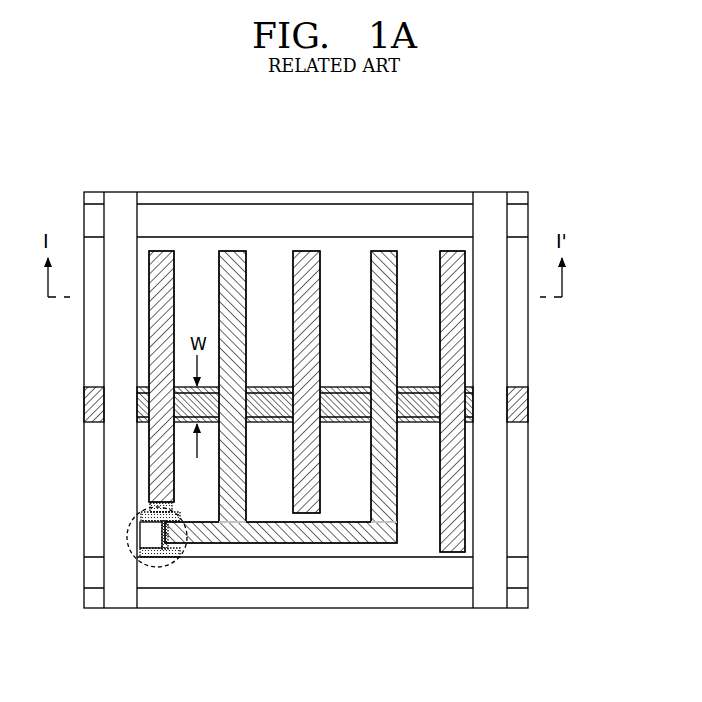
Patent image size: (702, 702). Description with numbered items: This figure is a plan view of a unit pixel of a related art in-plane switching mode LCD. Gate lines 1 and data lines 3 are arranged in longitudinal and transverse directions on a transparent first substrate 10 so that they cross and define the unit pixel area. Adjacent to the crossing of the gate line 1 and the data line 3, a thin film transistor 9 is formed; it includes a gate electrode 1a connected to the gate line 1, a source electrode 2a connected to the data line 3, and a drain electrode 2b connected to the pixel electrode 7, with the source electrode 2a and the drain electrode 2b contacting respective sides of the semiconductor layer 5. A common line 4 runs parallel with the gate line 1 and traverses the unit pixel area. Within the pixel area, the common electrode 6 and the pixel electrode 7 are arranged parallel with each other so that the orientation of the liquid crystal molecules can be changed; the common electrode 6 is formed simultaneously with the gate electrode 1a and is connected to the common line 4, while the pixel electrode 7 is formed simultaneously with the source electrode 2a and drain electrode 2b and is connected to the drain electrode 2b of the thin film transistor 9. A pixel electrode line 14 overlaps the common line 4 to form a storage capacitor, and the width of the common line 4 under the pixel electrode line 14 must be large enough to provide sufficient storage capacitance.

The gate line 1 is at (515, 210).
The gate electrode 1a is at (140, 510).
The source electrode 2a is at (150, 530).
The drain electrode 2b is at (170, 557).
The data line 3 is at (112, 447).
The common line 4 is at (86, 401).
The semiconductor layer 5 is at (162, 558).
The common electrode 6 is at (452, 254).
The pixel electrode 7 is at (384, 254).
The thin film transistor 9 is at (129, 549).
The first substrate 10 is at (543, 203).
The pixel electrode line 14 is at (460, 406).